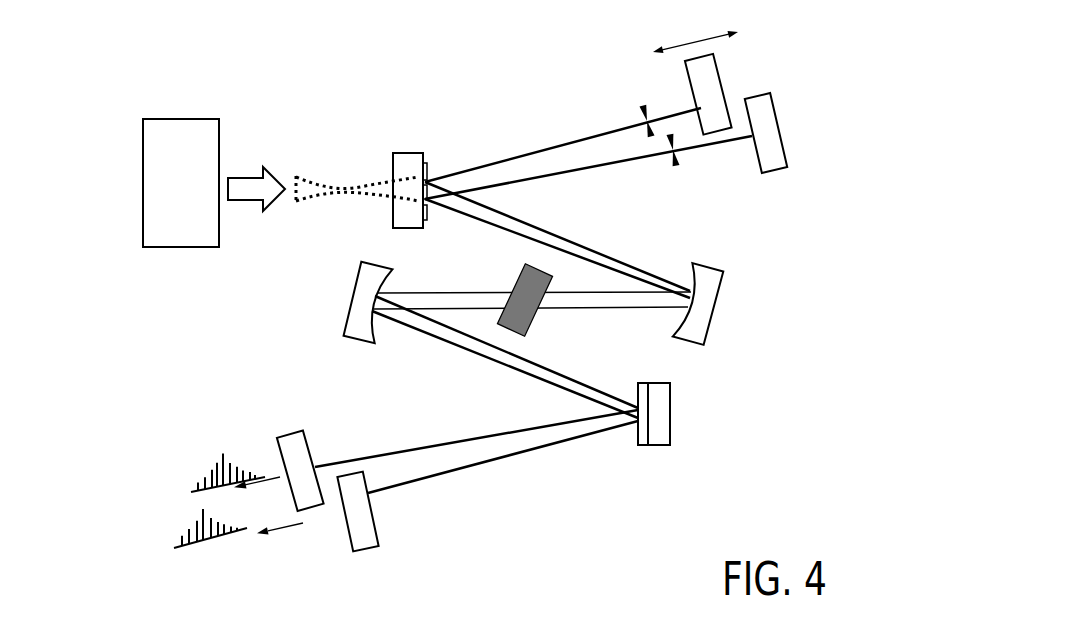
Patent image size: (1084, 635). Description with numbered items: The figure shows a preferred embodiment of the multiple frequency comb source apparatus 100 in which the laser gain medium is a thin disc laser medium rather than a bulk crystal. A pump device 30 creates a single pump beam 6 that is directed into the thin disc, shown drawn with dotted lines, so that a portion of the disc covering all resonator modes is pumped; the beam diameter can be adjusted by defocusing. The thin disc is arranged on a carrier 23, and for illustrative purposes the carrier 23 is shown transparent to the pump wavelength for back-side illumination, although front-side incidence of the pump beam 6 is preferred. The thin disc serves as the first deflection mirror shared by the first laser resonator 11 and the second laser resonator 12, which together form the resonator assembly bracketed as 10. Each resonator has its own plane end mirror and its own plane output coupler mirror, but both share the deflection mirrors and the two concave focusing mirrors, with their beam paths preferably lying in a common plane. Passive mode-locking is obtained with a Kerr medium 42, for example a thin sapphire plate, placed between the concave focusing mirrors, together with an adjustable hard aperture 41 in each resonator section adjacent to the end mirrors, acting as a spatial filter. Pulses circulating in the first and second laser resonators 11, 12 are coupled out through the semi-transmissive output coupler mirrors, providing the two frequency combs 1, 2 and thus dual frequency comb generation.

The multiple frequency comb source apparatus 100 is at (356, 82).
The pump device 30 is at (175, 161).
The pump beam 6 is at (323, 192).
The carrier 23 is at (405, 172).
The laser resonator 10 is at (808, 62).
The first laser resonator 11 is at (563, 145).
The second laser resonator 12 is at (568, 172).
The adjustable hard aperture 41 is at (643, 120).
The Kerr medium 42 is at (513, 287).
The frequency comb 1 is at (231, 465).
The frequency comb 2 is at (237, 528).